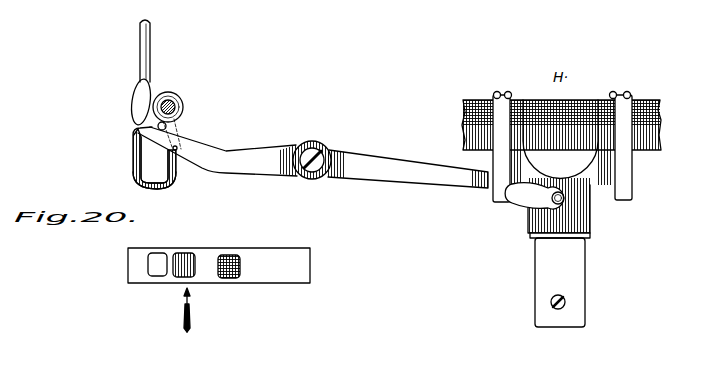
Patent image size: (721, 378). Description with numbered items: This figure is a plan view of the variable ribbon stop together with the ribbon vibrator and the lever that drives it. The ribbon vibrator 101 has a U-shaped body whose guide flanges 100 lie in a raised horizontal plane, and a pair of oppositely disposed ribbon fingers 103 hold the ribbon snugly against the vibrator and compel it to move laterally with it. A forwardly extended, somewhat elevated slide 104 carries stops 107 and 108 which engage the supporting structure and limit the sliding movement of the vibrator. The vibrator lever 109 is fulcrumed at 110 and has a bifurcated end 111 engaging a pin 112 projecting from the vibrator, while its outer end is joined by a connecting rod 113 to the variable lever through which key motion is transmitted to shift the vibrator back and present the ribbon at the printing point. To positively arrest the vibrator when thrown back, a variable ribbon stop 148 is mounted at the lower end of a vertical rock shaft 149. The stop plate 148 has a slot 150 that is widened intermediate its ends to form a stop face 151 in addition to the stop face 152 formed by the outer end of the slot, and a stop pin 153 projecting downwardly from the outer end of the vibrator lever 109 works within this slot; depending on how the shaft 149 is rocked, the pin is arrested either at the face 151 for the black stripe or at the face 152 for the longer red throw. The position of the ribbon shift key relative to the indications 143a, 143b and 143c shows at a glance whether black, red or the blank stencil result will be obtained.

The connecting rod 113 is at (152, 31).
The vertical rock shaft 149 is at (183, 106).
The slot 150 is at (177, 146).
The stop face 151 is at (140, 153).
The stop face 152 is at (146, 184).
The stop pin 153 is at (137, 129).
The variable ribbon stop 148 is at (170, 186).
The vibrator lever 109 is at (265, 153).
The fulcrum 110 is at (325, 150).
The ribbon fingers 103 is at (498, 92).
The bifurcated end 111 is at (556, 185).
The ribbon vibrator 101 is at (602, 168).
The guide flanges 100 is at (497, 193).
The pin 112 is at (569, 203).
The stop 108 is at (531, 239).
The slide 104 is at (579, 259).
The stop 107 is at (566, 302).
The indication 143a is at (231, 254).
The indication 143b is at (188, 252).
The indication 143c is at (151, 252).